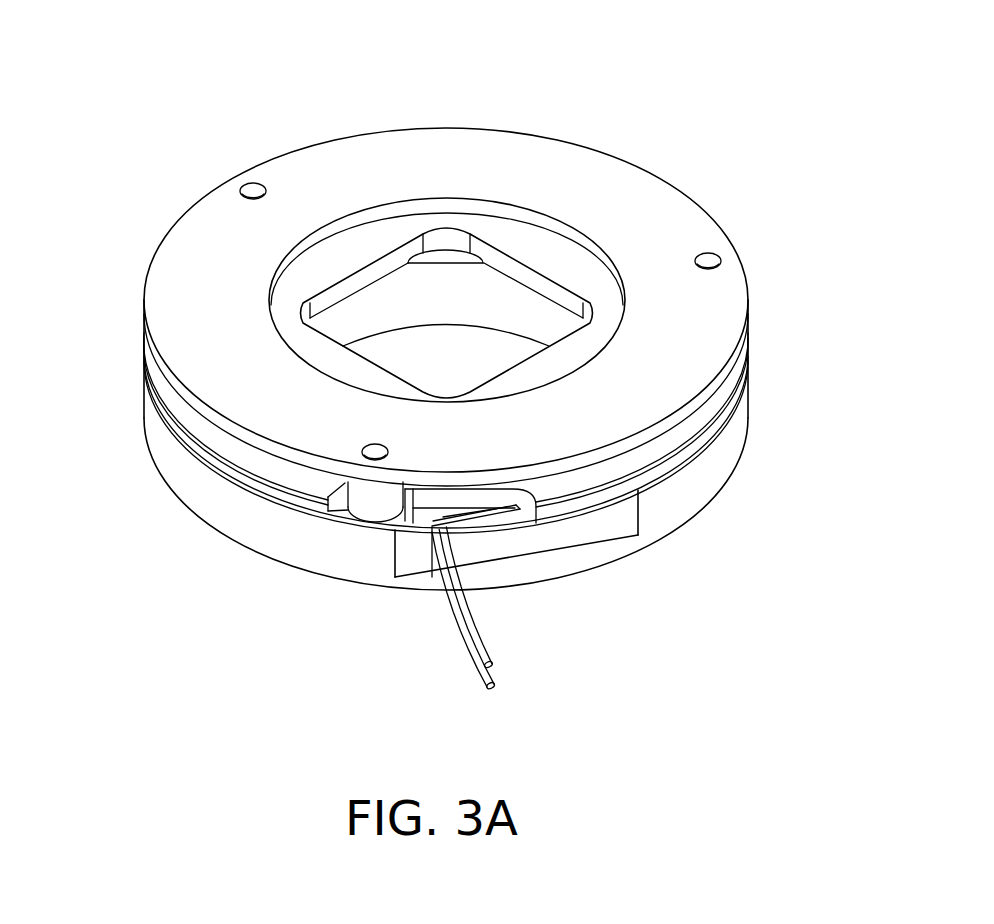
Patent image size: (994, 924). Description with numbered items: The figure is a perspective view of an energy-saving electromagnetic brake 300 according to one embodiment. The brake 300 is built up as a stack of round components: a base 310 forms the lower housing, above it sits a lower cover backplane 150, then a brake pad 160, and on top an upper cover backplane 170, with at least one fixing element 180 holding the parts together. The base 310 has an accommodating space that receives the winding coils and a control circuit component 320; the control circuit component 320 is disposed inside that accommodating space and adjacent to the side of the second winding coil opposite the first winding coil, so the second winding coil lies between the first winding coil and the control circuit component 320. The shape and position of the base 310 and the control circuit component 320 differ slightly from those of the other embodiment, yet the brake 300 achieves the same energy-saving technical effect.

The energy-saving electromagnetic brake 300 is at (110, 67).
The upper cover backplane 170 is at (637, 185).
The brake pad 160 is at (357, 243).
The lower cover backplane 150 is at (638, 460).
The base 310 is at (668, 510).
The control circuit component 320 is at (537, 553).
The fixing element 180 is at (368, 508).